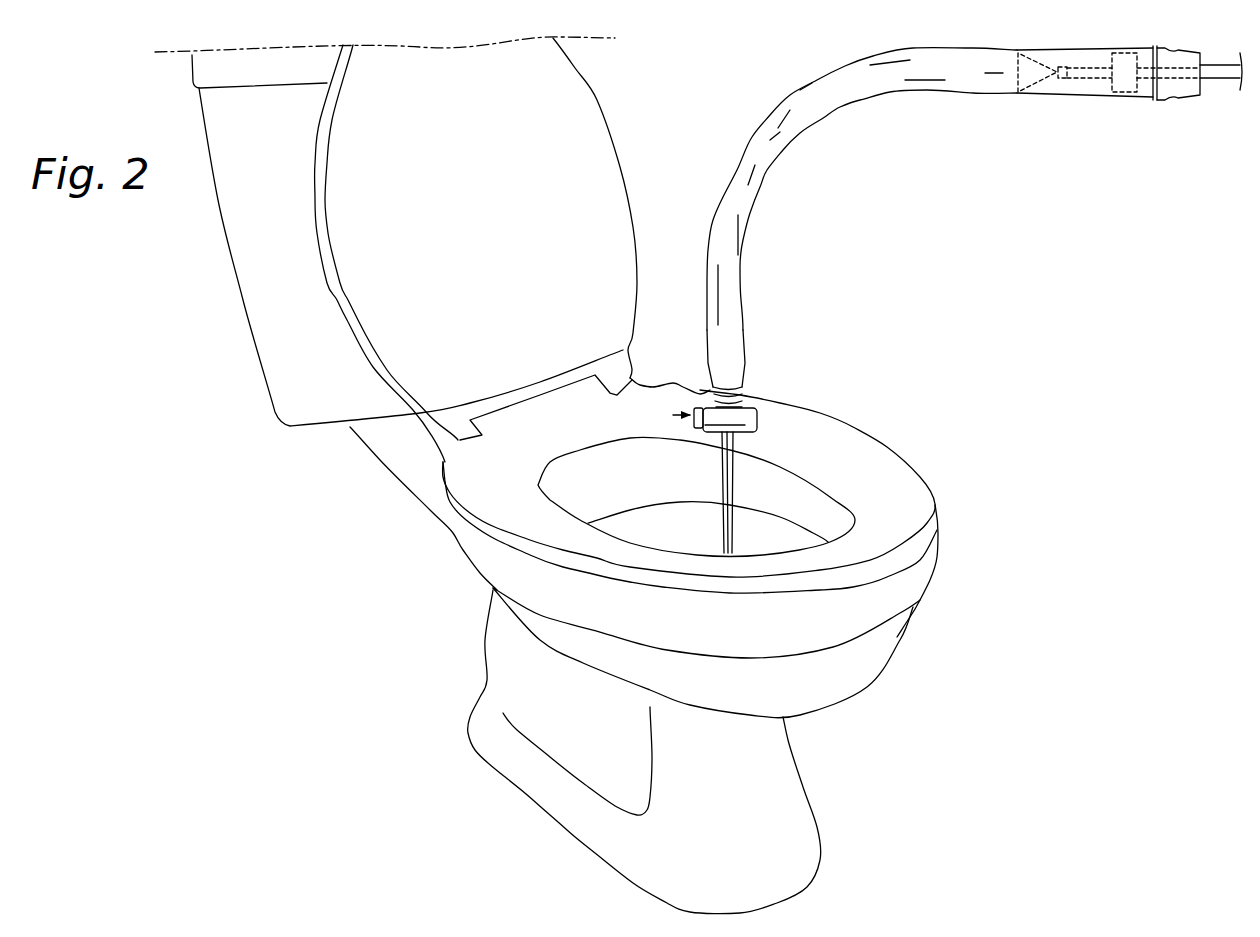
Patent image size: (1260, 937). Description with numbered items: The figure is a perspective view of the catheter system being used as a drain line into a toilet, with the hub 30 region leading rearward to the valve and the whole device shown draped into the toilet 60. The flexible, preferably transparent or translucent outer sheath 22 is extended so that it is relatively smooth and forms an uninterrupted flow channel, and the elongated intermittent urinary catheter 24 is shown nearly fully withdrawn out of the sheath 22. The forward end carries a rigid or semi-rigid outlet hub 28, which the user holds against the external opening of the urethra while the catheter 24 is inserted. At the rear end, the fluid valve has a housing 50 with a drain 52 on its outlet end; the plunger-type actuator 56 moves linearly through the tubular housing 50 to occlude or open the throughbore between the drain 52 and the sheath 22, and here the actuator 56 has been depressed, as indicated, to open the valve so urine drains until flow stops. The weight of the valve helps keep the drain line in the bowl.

The outer sheath 22 is at (827, 75).
The intermittent urinary catheter 24 is at (1223, 78).
The outlet hub 28 is at (1180, 53).
The connector body 30 is at (1133, 107).
The housing 50 is at (750, 407).
The drain 52 is at (718, 453).
The actuator 56 is at (697, 407).
The toilet 60 is at (450, 560).